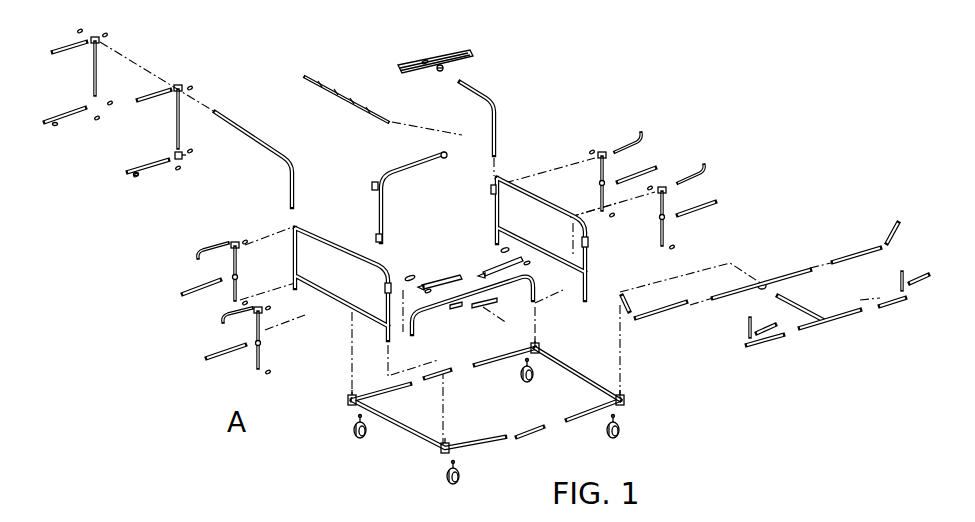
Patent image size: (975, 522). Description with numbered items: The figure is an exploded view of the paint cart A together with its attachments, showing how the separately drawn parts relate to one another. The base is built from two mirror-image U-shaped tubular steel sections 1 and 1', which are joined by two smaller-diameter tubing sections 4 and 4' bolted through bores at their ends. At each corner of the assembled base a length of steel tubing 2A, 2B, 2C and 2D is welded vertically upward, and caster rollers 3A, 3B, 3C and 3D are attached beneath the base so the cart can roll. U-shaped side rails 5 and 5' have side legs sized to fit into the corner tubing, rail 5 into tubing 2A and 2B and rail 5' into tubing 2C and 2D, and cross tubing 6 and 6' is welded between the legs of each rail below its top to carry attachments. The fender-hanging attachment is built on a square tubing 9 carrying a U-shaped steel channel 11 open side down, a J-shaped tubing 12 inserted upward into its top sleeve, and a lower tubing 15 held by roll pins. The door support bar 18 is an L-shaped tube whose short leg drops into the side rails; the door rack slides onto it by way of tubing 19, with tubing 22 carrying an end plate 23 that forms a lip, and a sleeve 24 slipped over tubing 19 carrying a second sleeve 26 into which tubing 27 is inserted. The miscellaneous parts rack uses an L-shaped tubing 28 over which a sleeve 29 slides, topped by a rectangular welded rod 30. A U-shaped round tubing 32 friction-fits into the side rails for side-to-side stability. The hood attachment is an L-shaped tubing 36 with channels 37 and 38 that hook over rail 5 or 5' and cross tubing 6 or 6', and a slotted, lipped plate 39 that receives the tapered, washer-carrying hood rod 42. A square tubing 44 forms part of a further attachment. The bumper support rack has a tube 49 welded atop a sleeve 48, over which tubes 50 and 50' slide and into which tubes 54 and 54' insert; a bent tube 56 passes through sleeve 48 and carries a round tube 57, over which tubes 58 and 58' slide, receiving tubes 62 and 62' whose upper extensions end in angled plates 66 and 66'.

The base section 1 is at (486, 407).
The base section 1' is at (577, 375).
The corner tubing 2A is at (449, 444).
The corner tubing 2B is at (347, 399).
The corner tubing 2C is at (540, 348).
The corner tubing 2D is at (625, 400).
The caster roller 3A is at (459, 478).
The caster roller 3B is at (355, 436).
The caster roller 3C is at (524, 382).
The caster roller 3D is at (619, 432).
The connecting tubing 4 is at (539, 445).
The connecting tubing 4' is at (447, 387).
The side rail 5 is at (341, 284).
The side rail 5' is at (538, 239).
The cross tubing 6 is at (376, 296).
The cross tubing 6' is at (563, 239).
The square steel tubing 9 is at (262, 351).
The U-shaped steel channel 11 is at (240, 247).
The J-shaped square tubing 12 is at (216, 251).
The square steel tubing 15 is at (204, 291).
The door support bar 18 is at (260, 132).
The square steel tubing 19 is at (92, 86).
The square steel tubing 22 is at (81, 38).
The steel plate 23 is at (115, 83).
The sleeve 24 is at (176, 160).
The sleeve 26 is at (192, 153).
The square steel tubing 27 is at (66, 117).
The square steel tubing 28 is at (497, 120).
The sleeve 29 is at (440, 73).
The steel rod 30 is at (440, 60).
The round steel tubing 32 is at (512, 288).
The steel tubing 36 is at (428, 165).
The steel channel 37 is at (372, 185).
The steel channel 38 is at (383, 240).
The steel plate 39 is at (448, 158).
The steel rod 42 is at (333, 90).
The square steel tubing 44 is at (441, 277).
The square steel tube 48 is at (758, 288).
The square steel tubing 49 is at (797, 275).
The square steel tubing 50 is at (661, 320).
The square steel tubing 50' is at (856, 268).
The square steel tubing 54 is at (644, 300).
The square steel tubing 54' is at (877, 223).
The square steel tubing 56 is at (810, 308).
The round steel tubing 57 is at (832, 326).
The tube 58 is at (773, 353).
The tube 58' is at (896, 318).
The round tube 62 is at (727, 333).
The round tube 62' is at (879, 285).
The steel plate 66 is at (772, 318).
The steel plate 66' is at (923, 269).